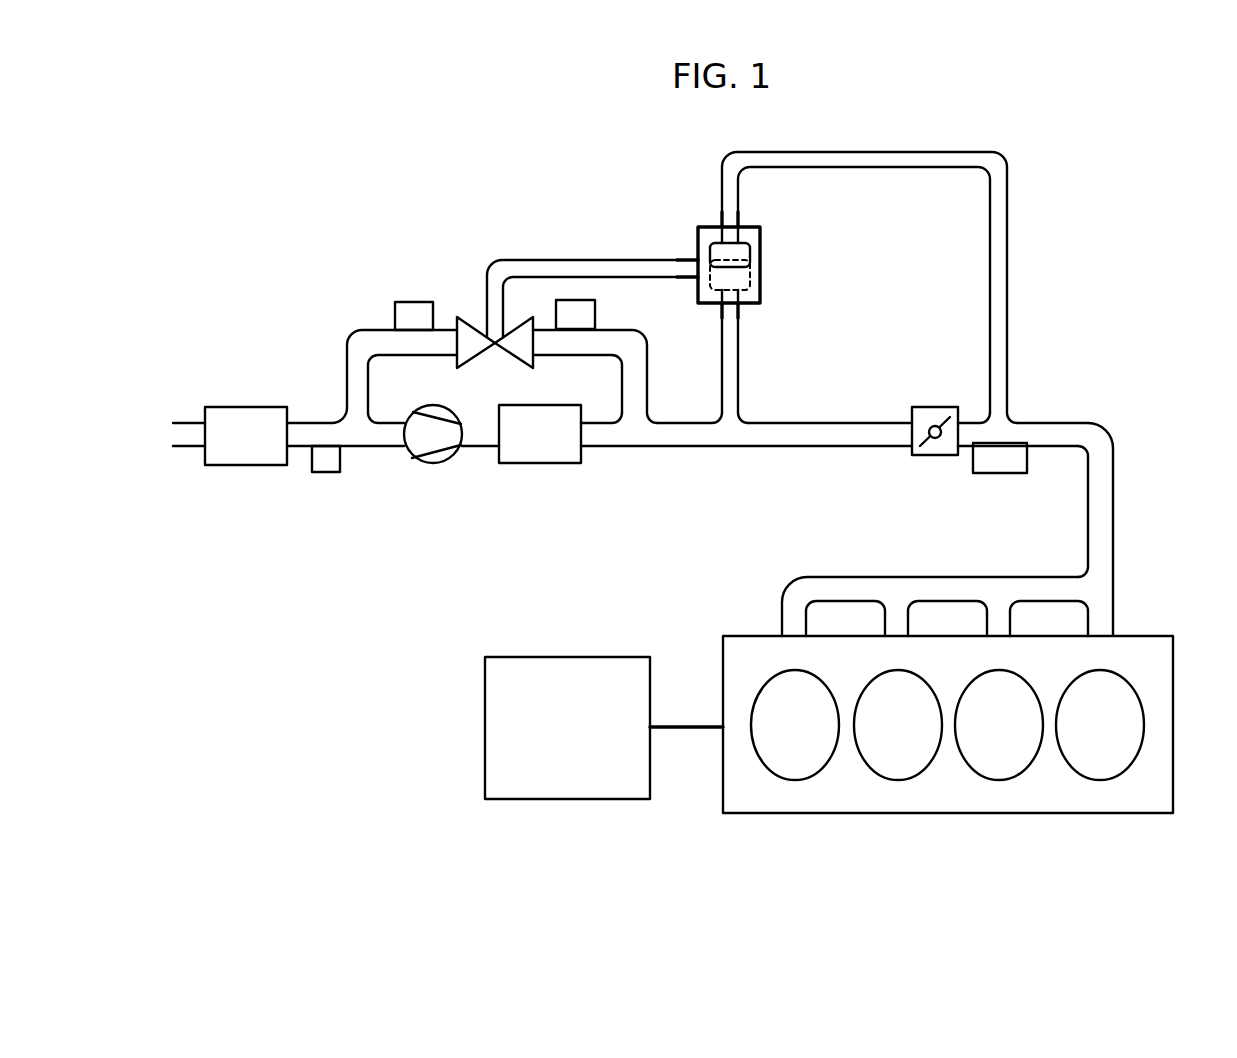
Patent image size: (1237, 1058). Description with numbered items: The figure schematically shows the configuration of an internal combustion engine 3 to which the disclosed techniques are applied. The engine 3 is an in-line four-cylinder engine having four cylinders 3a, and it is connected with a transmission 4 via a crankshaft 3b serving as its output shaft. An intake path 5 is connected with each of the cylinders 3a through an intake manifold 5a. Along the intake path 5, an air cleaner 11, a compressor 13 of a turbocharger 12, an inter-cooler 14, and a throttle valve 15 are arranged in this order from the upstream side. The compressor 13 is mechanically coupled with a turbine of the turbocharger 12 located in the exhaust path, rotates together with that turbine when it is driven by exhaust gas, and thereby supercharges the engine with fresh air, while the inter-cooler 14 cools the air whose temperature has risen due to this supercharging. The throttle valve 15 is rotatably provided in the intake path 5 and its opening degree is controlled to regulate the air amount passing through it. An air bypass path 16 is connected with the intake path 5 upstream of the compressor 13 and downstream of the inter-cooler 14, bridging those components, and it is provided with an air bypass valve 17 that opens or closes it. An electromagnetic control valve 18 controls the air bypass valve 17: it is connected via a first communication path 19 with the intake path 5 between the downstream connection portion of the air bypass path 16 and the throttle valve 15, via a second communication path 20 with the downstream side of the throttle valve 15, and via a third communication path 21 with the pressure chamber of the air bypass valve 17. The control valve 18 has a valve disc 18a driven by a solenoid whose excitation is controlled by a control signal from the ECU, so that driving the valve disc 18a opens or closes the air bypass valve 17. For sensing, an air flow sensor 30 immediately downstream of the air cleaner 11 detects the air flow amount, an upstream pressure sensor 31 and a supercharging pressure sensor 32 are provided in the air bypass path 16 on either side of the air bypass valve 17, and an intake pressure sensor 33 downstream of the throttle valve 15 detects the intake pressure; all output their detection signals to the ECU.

The internal combustion engine 3 is at (972, 760).
The cylinder 3a is at (1095, 780).
The crankshaft 3b is at (683, 732).
The transmission 4 is at (575, 657).
The intake path 5 is at (1113, 505).
The intake manifold 5a is at (1113, 608).
The air cleaner 11 is at (243, 407).
The turbocharger 12 is at (414, 475).
The compressor 13 is at (437, 465).
The inter-cooler 14 is at (537, 463).
The throttle valve 15 is at (936, 440).
The air bypass path 16 is at (375, 330).
The air bypass valve 17 is at (472, 323).
The electromagnetic control valve 18 is at (761, 263).
The valve disc 18a is at (752, 257).
The first communication path 19 is at (740, 360).
The second communication path 20 is at (850, 152).
The third communication path 21 is at (590, 260).
The air flow sensor 30 is at (324, 472).
The upstream pressure sensor 31 is at (415, 302).
The supercharging pressure sensor 32 is at (595, 318).
The intake pressure sensor 33 is at (1000, 473).